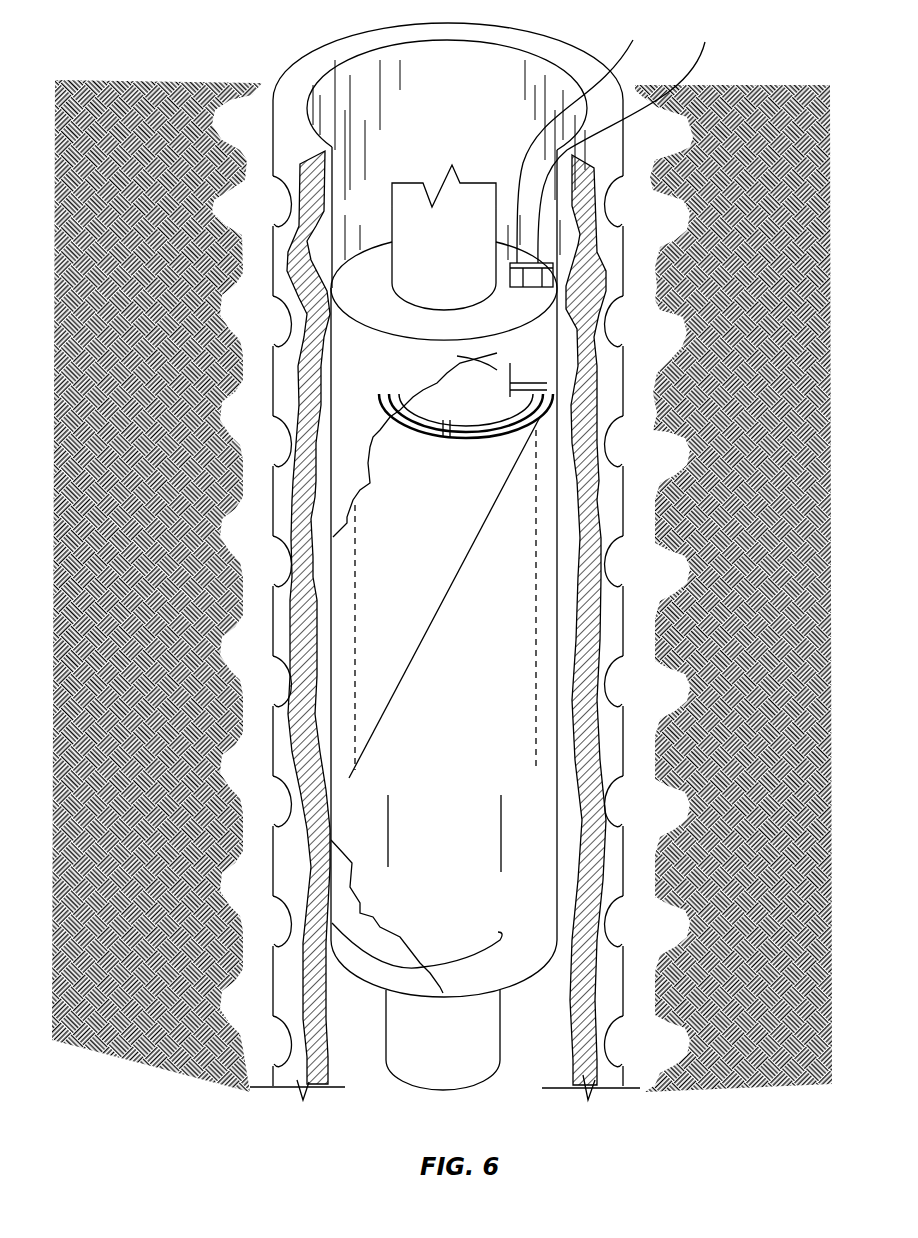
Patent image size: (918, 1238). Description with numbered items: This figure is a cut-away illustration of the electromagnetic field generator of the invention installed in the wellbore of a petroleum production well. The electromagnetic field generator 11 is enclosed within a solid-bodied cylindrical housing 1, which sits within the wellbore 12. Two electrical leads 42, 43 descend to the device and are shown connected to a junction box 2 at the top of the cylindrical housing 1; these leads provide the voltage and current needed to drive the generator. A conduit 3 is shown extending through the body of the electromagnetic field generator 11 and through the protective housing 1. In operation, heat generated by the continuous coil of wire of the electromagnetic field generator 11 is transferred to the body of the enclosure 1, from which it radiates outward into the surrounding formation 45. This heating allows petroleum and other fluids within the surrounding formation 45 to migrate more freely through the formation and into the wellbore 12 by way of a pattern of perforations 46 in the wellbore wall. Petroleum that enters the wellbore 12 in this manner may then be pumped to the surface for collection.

The cylindrical housing 1 is at (386, 383).
The junction box 2 is at (557, 275).
The conduit 3 is at (450, 1062).
The electromagnetic field generator 11 is at (461, 681).
The wellbore 12 is at (280, 139).
The electrical lead 42 is at (551, 110).
The electrical lead 43 is at (543, 160).
The formation 45 is at (148, 177).
The perforations 46 is at (282, 222).